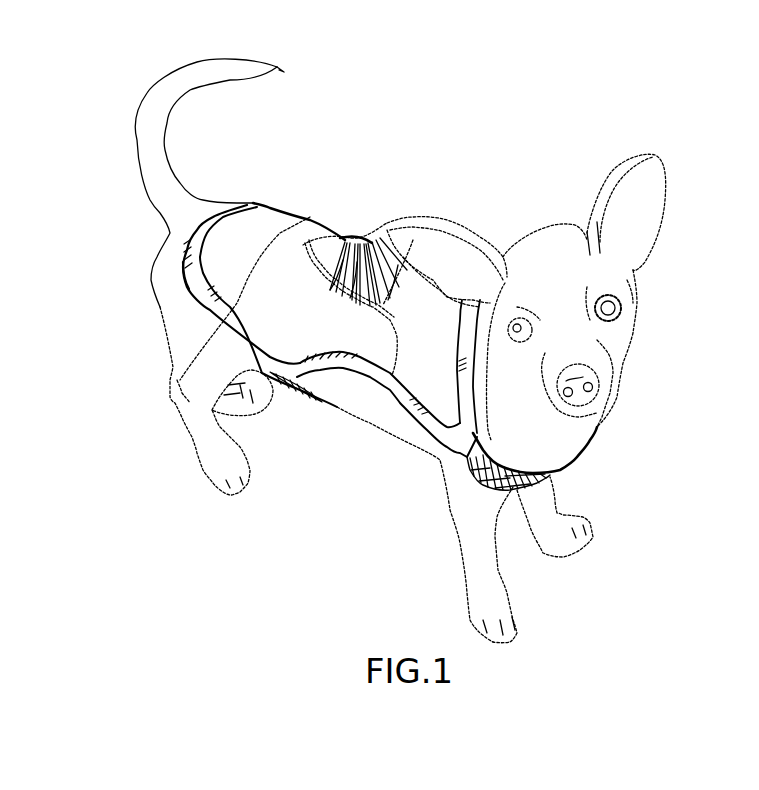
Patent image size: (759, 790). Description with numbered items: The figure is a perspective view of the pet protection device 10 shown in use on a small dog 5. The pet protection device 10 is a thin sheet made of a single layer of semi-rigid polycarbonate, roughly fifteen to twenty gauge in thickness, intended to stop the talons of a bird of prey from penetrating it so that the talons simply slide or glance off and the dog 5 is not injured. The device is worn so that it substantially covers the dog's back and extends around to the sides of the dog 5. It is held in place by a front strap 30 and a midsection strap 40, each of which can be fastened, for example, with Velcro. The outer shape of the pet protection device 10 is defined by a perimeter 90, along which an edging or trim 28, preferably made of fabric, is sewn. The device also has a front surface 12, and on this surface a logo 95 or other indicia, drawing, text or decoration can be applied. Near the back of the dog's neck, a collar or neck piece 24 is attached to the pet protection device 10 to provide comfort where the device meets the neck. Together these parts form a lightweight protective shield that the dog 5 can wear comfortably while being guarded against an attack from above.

The dog 5 is at (667, 307).
The pet protection device 10 is at (313, 332).
The front surface 12 is at (296, 325).
The collar or neck piece 24 is at (490, 370).
The edging or trim 28 is at (393, 383).
The front strap 30 is at (473, 480).
The midsection strap 40 is at (301, 400).
The perimeter 90 is at (230, 338).
The logo 95 is at (405, 298).